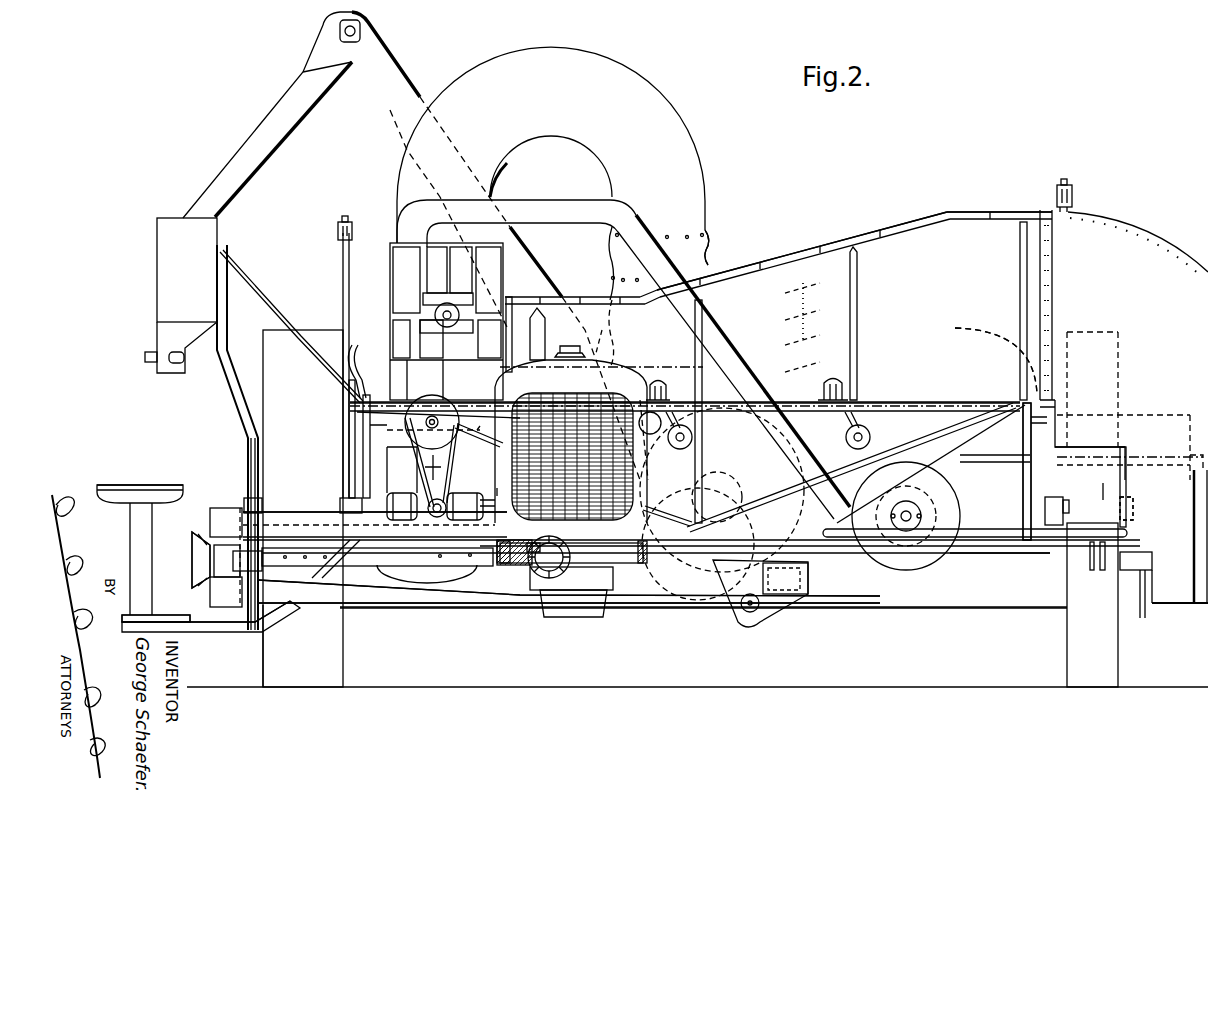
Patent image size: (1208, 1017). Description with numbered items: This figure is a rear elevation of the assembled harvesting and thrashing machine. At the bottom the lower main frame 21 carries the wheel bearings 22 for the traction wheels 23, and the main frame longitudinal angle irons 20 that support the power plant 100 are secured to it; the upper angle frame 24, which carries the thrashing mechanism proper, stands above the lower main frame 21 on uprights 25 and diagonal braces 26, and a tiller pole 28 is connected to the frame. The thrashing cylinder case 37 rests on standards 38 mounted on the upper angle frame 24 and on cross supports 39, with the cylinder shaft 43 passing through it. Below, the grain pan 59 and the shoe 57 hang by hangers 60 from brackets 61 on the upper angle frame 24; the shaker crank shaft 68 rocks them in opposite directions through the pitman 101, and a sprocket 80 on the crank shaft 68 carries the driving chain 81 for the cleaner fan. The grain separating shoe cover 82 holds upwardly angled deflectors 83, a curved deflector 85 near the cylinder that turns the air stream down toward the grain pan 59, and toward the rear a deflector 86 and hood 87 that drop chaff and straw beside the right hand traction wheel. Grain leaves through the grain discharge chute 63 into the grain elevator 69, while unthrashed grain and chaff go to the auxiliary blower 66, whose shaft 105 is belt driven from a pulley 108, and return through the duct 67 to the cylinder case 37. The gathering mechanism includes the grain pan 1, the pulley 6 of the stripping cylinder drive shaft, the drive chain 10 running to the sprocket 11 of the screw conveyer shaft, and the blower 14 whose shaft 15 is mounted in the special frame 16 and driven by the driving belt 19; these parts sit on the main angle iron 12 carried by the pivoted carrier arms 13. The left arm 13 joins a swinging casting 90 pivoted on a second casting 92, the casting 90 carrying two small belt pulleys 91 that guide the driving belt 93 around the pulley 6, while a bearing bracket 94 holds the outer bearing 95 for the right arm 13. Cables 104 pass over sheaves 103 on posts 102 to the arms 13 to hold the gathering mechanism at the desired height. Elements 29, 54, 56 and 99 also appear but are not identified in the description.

The grain pan 1 is at (408, 605).
The pulley 6 is at (192, 543).
The drive chain 10 is at (266, 119).
The sprocket 11 is at (157, 263).
The main angle iron 12 is at (163, 615).
The pivoted carrier arms 13 is at (1152, 594).
The blower 14 is at (668, 590).
The blower shaft 15 is at (463, 568).
The special frame 16 is at (487, 503).
The driving belt 19 is at (447, 502).
The main frame longitudinal angle irons 20 is at (518, 563).
The lower main frame 21 is at (1008, 529).
The wheel bearings 22 is at (1140, 503).
The traction wheels 23 is at (1112, 483).
The upper angle frame 24 is at (355, 411).
The uprights 25 is at (362, 438).
The diagonal braces 26 is at (479, 448).
The tiller pole 28 is at (550, 572).
The ledge 29 is at (990, 553).
The thrashing cylinder case 37 is at (497, 270).
The standards 38 is at (430, 295).
The cross supports 39 is at (391, 328).
The cylinder shaft 43 is at (443, 307).
The drum housing 54 is at (551, 145).
The casing 56 is at (710, 248).
The shoe 57 is at (966, 445).
The grain pan 59 is at (370, 415).
The hangers 60 is at (360, 380).
The brackets 61 is at (362, 357).
The grain discharge chute 63 is at (808, 575).
The auxiliary blower 66 is at (929, 470).
The duct 67 is at (637, 221).
The shaker crank shaft 68 is at (435, 415).
The grain elevator 69 is at (518, 262).
The sprocket 80 is at (433, 397).
The driving chain 81 is at (418, 472).
The grain separating shoe cover 82 is at (903, 222).
The upwardly angled deflectors 83 is at (801, 311).
The curved deflector 85 is at (610, 320).
The deflector 86 is at (990, 332).
The hood 87 is at (1187, 252).
The casting 90 is at (221, 558).
The small belt pulleys 91 is at (218, 510).
The second casting 92 is at (287, 580).
The driving belt 93 is at (387, 597).
The bearing bracket 94 is at (1094, 570).
The outer bearing 95 is at (1140, 557).
The pipe 99 is at (224, 300).
The power plant 100 is at (572, 456).
The pitman 101 is at (500, 440).
The posts 102 is at (343, 262).
The sheaves 103 is at (347, 228).
The cables 104 is at (343, 222).
The blower shaft 105 is at (907, 495).
The pulley 108 is at (497, 491).